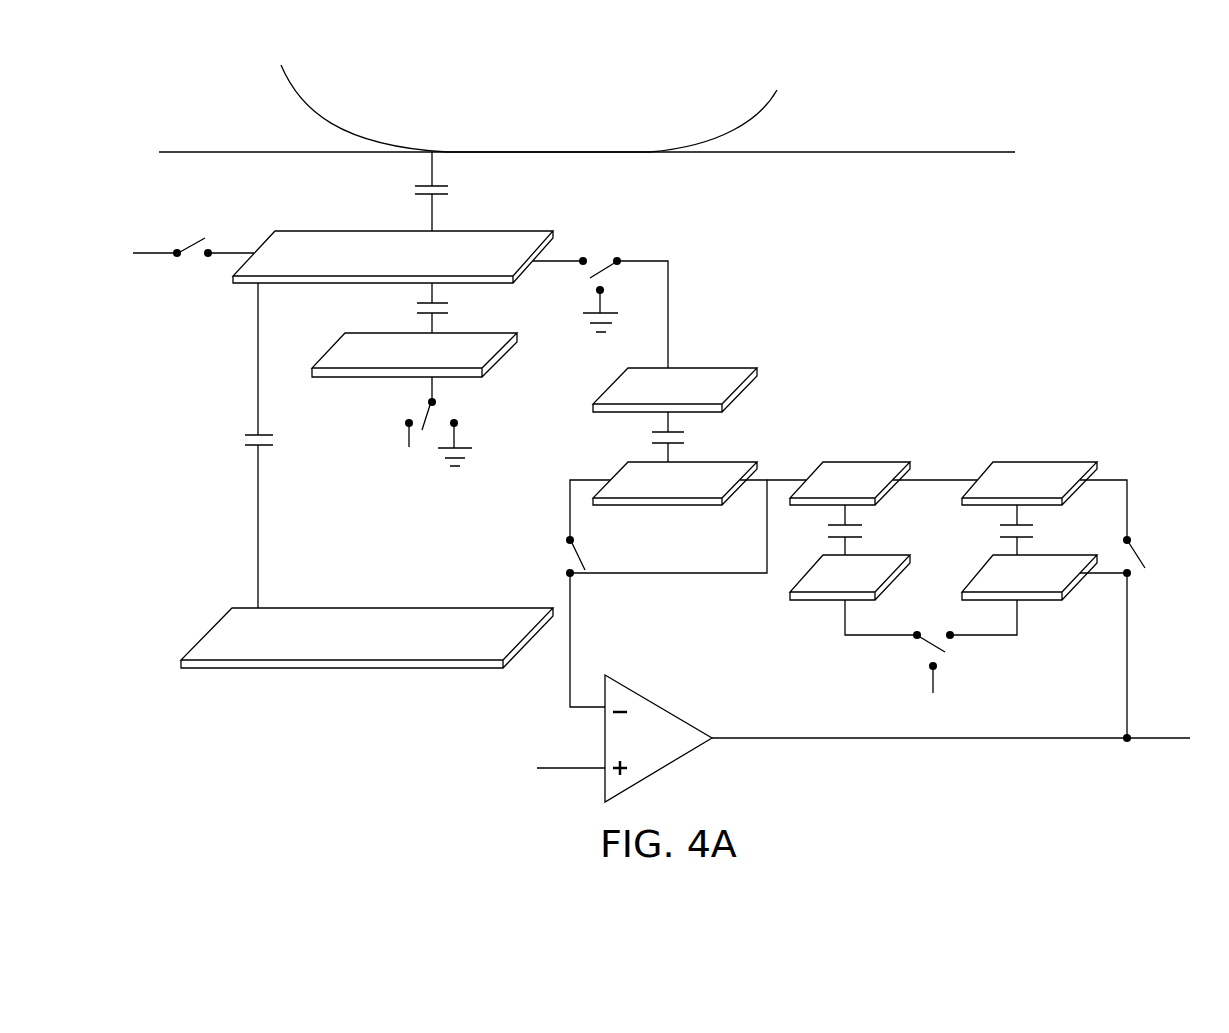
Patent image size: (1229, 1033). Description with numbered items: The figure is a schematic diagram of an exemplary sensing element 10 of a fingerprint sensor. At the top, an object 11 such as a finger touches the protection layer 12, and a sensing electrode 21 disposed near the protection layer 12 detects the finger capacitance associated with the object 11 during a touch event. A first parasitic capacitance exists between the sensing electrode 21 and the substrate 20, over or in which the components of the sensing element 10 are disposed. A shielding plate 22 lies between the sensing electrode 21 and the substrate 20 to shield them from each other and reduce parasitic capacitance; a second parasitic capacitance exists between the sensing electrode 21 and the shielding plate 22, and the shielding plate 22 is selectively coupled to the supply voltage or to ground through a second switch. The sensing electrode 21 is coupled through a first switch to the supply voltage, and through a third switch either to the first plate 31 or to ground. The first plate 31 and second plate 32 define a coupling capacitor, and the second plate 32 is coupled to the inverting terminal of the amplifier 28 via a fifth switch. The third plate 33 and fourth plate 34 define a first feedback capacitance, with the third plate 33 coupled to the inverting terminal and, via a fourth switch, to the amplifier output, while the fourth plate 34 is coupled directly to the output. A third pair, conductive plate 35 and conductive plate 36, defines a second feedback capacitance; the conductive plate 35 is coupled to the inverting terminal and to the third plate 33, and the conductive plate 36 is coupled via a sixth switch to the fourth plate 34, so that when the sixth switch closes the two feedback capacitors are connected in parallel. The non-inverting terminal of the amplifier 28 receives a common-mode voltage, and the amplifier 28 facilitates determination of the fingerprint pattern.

The sensing element 10 is at (818, 266).
The object 11 is at (775, 100).
The protection layer 12 is at (953, 151).
The substrate 20 is at (207, 633).
The sensing electrode 21 is at (312, 230).
The shielding plate 22 is at (327, 352).
The amplifier 28 is at (664, 750).
The first plate 31 is at (608, 383).
The second plate 32 is at (620, 467).
The third plate 33 is at (1046, 460).
The fourth plate 34 is at (1080, 553).
The conductive plate 35 is at (866, 460).
The conductive plate 36 is at (893, 553).